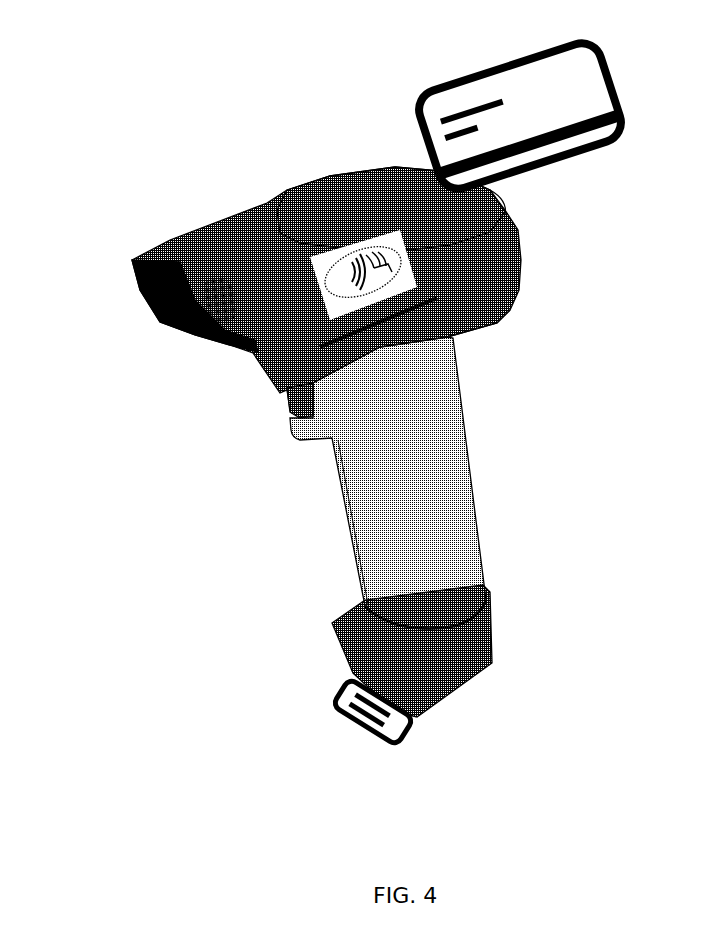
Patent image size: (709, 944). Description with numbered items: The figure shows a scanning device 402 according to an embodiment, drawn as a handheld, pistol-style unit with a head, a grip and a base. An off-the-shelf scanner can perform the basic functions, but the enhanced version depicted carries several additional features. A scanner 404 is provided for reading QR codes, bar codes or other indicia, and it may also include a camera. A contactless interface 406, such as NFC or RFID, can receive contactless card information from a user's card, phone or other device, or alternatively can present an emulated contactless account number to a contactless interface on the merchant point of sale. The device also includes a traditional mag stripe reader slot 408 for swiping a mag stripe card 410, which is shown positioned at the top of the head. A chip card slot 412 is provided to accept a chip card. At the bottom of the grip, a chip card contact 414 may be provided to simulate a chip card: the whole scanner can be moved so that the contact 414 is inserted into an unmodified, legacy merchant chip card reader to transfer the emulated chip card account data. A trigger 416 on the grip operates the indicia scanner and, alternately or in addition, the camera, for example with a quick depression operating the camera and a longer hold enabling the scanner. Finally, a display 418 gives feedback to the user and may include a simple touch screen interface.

The scanning device 402 is at (472, 476).
The scanner 404 is at (175, 334).
The contactless interface 406 is at (503, 200).
The mag stripe reader slot 408 is at (344, 182).
The mag stripe card 410 is at (604, 70).
The chip card slot 412 is at (497, 323).
The chip card contact 414 is at (340, 722).
The trigger 416 is at (340, 395).
The display 418 is at (518, 270).